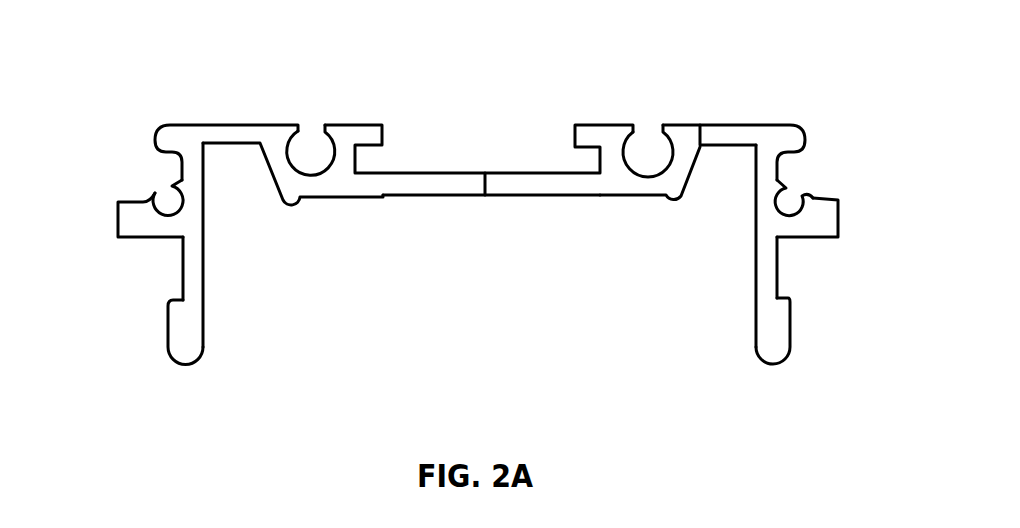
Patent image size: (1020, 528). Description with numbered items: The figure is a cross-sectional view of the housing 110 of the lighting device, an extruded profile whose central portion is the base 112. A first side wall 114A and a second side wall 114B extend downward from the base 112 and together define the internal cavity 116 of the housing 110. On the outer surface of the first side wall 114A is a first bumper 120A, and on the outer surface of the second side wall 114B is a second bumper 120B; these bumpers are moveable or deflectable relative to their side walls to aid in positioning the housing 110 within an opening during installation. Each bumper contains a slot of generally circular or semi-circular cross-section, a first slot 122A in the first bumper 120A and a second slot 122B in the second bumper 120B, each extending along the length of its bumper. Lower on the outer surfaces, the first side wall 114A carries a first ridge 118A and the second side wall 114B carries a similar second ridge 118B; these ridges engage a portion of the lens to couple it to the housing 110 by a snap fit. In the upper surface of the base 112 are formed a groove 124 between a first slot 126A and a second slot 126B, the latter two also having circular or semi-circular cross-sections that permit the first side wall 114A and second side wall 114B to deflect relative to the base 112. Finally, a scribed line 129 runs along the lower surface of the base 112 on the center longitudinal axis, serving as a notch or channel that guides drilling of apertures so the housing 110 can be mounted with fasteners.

The housing 110 is at (183, 58).
The base 112 is at (543, 188).
The first side wall 114A is at (204, 257).
The second side wall 114B is at (756, 259).
The internal cavity 116 is at (297, 348).
The first ridge 118A is at (176, 299).
The second ridge 118B is at (790, 297).
The first bumper 120A is at (126, 218).
The second bumper 120B is at (838, 218).
The first slot 122A is at (163, 192).
The second slot 122B is at (793, 192).
The groove 124 is at (464, 135).
The first slot 126A is at (312, 135).
The second slot 126B is at (648, 135).
The scribed line 129 is at (481, 193).